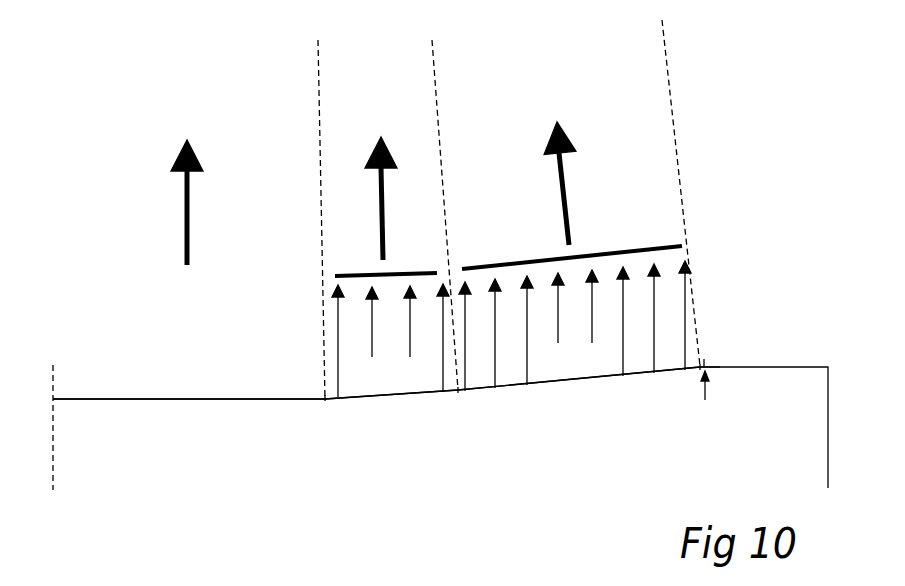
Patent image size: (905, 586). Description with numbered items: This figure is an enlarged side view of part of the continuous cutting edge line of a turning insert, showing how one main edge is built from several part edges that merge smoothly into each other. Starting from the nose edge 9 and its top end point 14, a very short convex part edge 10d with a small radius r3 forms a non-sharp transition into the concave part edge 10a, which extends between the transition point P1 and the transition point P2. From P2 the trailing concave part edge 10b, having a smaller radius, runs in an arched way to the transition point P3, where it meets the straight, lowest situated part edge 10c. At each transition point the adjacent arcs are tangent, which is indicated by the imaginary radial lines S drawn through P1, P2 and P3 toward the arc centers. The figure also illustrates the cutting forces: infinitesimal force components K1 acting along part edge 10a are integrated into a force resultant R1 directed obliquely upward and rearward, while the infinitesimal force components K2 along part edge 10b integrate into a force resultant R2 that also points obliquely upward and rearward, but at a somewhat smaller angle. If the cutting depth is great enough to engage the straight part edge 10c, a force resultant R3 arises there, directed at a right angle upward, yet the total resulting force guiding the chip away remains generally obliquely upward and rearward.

The nose edge 9 is at (795, 366).
The part edge 10a is at (578, 380).
The part edge 10b is at (386, 397).
The part edge 10c is at (157, 402).
The part edge 10d is at (702, 359).
The end point 14 is at (710, 360).
The transition point P1 is at (700, 369).
The transition point P2 is at (459, 393).
The transition point P3 is at (326, 401).
The radius r3 is at (706, 399).
The imaginary radial line S is at (318, 85).
The infinitesimal force components K1 is at (575, 318).
The infinitesimal force components K2 is at (390, 335).
The force resultant R1 is at (567, 182).
The force resultant R2 is at (388, 198).
The force resultant R3 is at (192, 202).